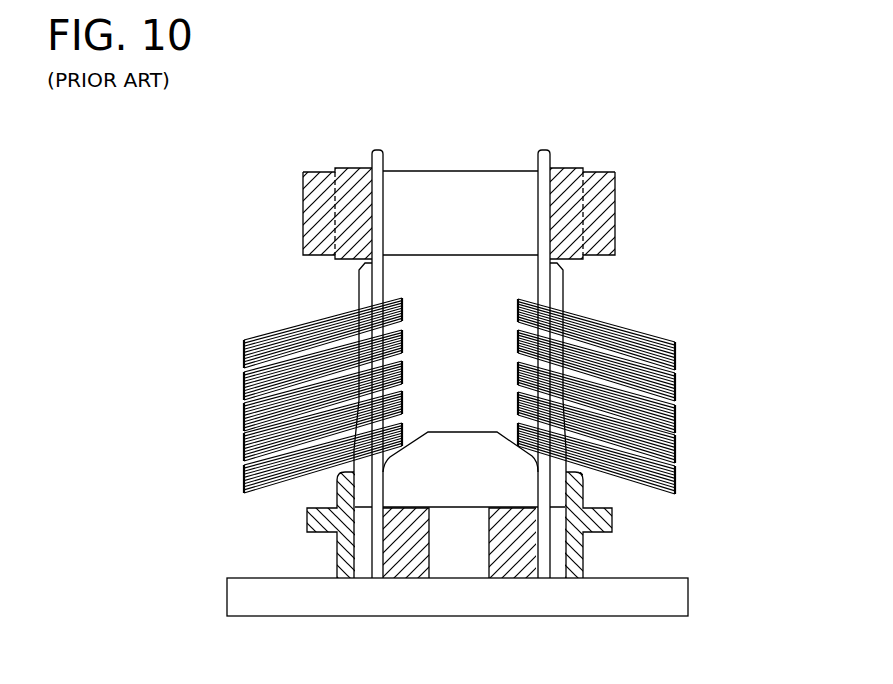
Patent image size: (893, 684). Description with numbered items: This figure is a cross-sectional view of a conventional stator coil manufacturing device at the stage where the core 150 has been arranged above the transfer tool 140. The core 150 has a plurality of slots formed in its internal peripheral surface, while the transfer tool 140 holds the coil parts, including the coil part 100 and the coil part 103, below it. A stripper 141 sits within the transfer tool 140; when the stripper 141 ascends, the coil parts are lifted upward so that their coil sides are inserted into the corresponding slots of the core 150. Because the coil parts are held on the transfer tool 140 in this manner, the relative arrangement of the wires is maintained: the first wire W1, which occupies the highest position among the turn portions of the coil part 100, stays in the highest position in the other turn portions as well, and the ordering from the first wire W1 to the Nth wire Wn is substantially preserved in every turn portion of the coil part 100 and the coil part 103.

The coil part 100 is at (694, 408).
The coil part 103 is at (227, 403).
The transfer tool 140 is at (647, 547).
The stripper 141 is at (432, 443).
The core 150 is at (470, 182).
The first wire W1 is at (633, 325).
The Nth wire Wn is at (532, 330).